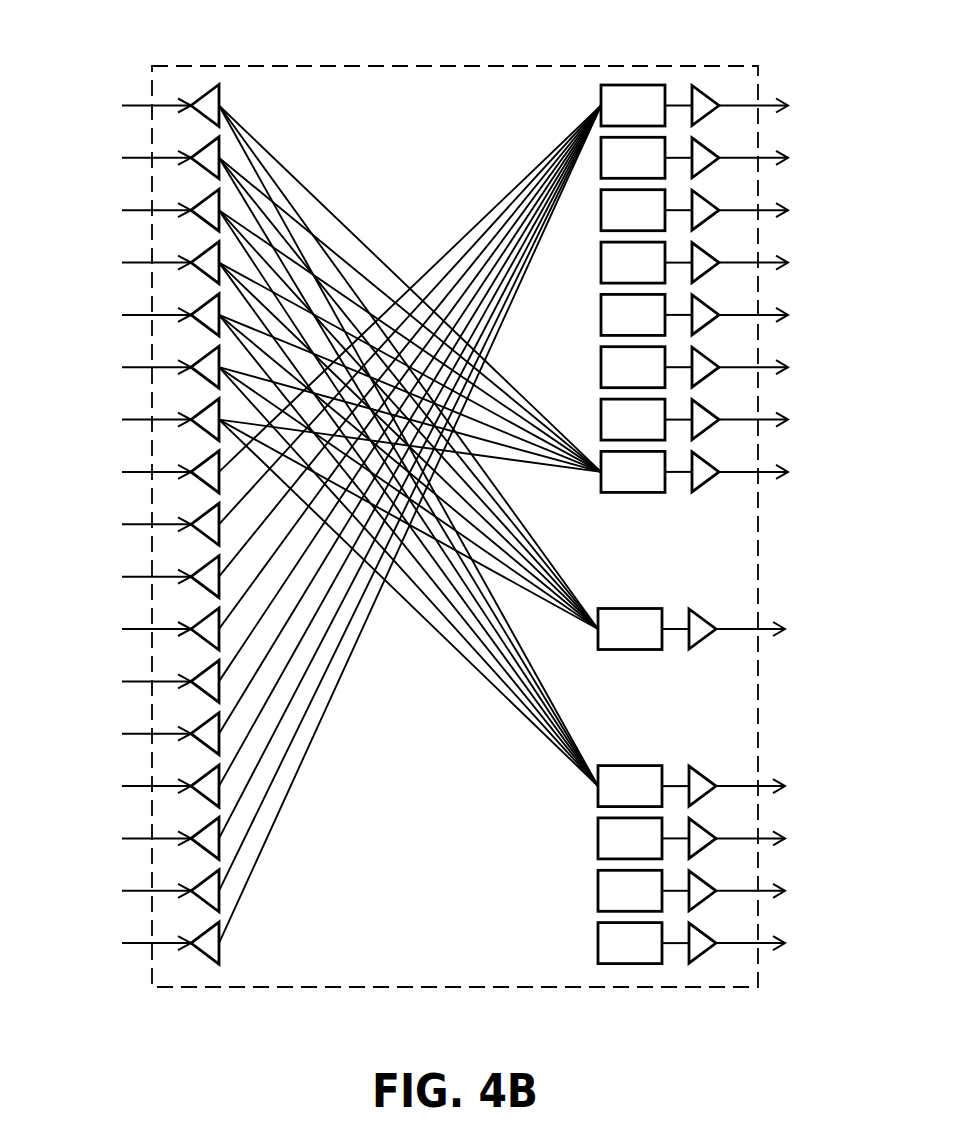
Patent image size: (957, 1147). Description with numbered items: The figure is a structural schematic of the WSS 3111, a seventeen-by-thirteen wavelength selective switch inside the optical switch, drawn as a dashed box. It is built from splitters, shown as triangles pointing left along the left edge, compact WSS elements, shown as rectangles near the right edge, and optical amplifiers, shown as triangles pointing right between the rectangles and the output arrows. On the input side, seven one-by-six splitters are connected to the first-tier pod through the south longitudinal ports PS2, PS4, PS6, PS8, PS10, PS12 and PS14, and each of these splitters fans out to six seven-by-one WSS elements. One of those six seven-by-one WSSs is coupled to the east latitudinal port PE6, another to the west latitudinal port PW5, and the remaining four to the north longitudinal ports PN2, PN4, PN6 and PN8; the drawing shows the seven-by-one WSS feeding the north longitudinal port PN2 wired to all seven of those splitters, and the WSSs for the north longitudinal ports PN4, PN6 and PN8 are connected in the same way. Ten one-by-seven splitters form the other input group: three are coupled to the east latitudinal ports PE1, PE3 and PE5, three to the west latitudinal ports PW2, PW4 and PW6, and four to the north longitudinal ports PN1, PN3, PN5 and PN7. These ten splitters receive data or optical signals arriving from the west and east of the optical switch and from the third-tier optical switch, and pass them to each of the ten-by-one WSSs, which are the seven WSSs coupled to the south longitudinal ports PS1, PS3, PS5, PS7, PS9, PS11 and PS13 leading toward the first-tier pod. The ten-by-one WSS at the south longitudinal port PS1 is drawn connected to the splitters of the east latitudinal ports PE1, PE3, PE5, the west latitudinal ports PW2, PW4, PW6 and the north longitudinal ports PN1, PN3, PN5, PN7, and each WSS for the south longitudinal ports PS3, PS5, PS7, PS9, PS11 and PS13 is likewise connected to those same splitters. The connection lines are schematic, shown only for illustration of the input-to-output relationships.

The WSS 3111 is at (710, 67).
The south longitudinal port PS2 is at (143, 106).
The south longitudinal port PS4 is at (143, 158).
The south longitudinal port PS6 is at (143, 210).
The south longitudinal port PS8 is at (143, 263).
The south longitudinal port PS10 is at (136, 315).
The south longitudinal port PS12 is at (136, 367).
The south longitudinal port PS14 is at (136, 420).
The east latitudinal port PE1 is at (143, 472).
The east latitudinal port PE3 is at (143, 524).
The east latitudinal port PE5 is at (143, 577).
The west latitudinal port PW2 is at (143, 629).
The west latitudinal port PW4 is at (143, 681).
The west latitudinal port PW6 is at (143, 734).
The north longitudinal port PN1 is at (143, 786).
The north longitudinal port PN3 is at (143, 838).
The north longitudinal port PN5 is at (143, 891).
The north longitudinal port PN7 is at (143, 943).
The south longitudinal port PS1 is at (722, 105).
The south longitudinal port PS3 is at (722, 157).
The south longitudinal port PS5 is at (722, 210).
The south longitudinal port PS7 is at (722, 262).
The south longitudinal port PS9 is at (722, 314).
The south longitudinal port PS11 is at (729, 367).
The south longitudinal port PS13 is at (729, 419).
The east latitudinal port PE6 is at (722, 471).
The west latitudinal port PW5 is at (721, 629).
The north longitudinal port PN2 is at (721, 786).
The north longitudinal port PN4 is at (721, 838).
The north longitudinal port PN6 is at (721, 890).
The north longitudinal port PN8 is at (721, 943).